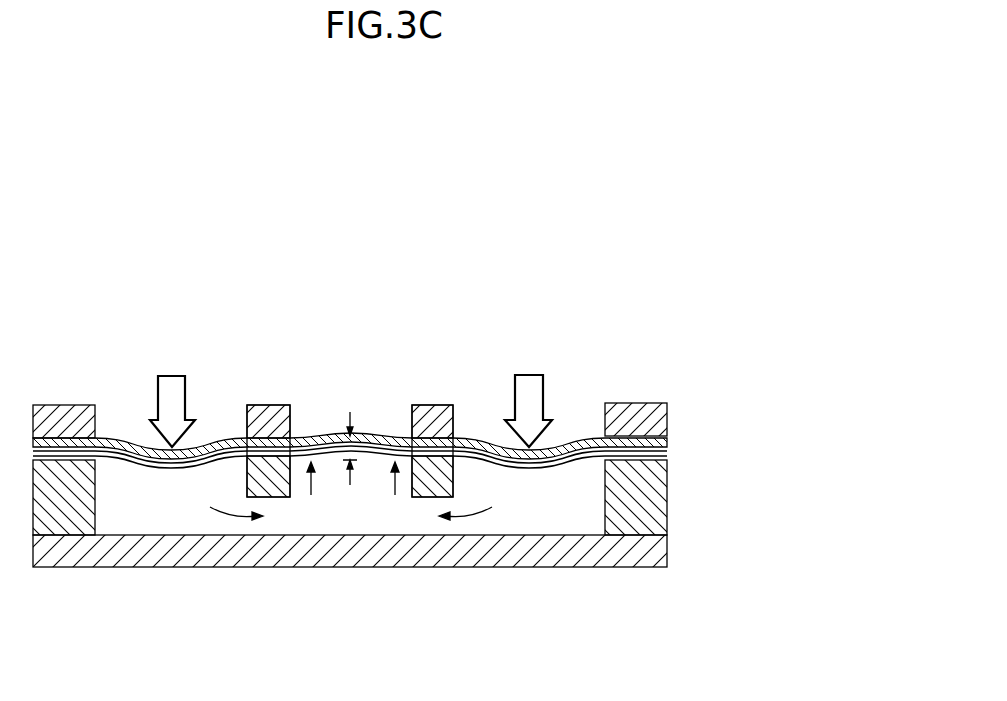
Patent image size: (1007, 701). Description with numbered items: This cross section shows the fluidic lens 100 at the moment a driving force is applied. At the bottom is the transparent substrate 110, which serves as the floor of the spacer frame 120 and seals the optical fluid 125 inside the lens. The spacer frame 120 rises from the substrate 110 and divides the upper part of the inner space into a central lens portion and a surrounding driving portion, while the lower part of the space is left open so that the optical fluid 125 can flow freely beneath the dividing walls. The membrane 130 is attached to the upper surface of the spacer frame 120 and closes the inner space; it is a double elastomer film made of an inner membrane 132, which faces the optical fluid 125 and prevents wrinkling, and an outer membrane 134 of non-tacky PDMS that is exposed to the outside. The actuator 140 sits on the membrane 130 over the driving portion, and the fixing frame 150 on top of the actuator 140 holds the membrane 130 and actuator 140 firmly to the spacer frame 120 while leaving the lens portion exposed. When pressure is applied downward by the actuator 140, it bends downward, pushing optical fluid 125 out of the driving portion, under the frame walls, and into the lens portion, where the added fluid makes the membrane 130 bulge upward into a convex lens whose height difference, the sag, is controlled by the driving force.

The fluidic lens 100 is at (692, 316).
The substrate 110 is at (663, 548).
The spacer frame 120 is at (663, 508).
The optical fluid 125 is at (420, 528).
The membrane 130 is at (412, 447).
The inner membrane 132 is at (664, 458).
The outer membrane 134 is at (664, 450).
The actuator 140 is at (665, 443).
The fixing frame 150 is at (666, 404).